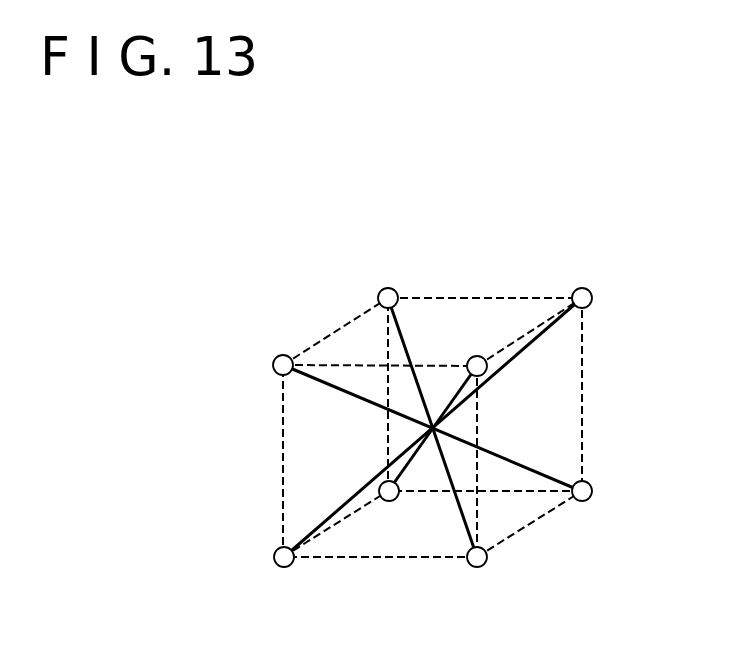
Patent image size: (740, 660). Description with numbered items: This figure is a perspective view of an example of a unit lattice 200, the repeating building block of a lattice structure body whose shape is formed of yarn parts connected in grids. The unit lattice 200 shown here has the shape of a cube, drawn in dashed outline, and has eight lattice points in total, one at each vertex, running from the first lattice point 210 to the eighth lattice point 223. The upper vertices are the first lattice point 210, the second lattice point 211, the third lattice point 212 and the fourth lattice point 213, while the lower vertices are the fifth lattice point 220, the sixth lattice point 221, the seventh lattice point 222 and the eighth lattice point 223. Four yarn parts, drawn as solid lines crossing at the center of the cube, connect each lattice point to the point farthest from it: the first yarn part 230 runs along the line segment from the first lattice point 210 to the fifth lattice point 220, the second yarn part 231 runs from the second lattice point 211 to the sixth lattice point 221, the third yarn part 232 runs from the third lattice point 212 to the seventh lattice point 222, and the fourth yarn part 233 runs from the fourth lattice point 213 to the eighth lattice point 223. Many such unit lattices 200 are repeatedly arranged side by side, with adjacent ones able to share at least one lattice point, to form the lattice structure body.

The unit lattice 200 is at (247, 223).
The first lattice point 210 is at (281, 354).
The second lattice point 211 is at (386, 287).
The third lattice point 212 is at (582, 287).
The fourth lattice point 213 is at (481, 356).
The fifth lattice point 220 is at (592, 491).
The sixth lattice point 221 is at (485, 566).
The seventh lattice point 222 is at (276, 565).
The eighth lattice point 223 is at (387, 501).
The first yarn part 230 is at (538, 476).
The second yarn part 231 is at (401, 325).
The third yarn part 232 is at (320, 521).
The fourth yarn part 233 is at (404, 478).